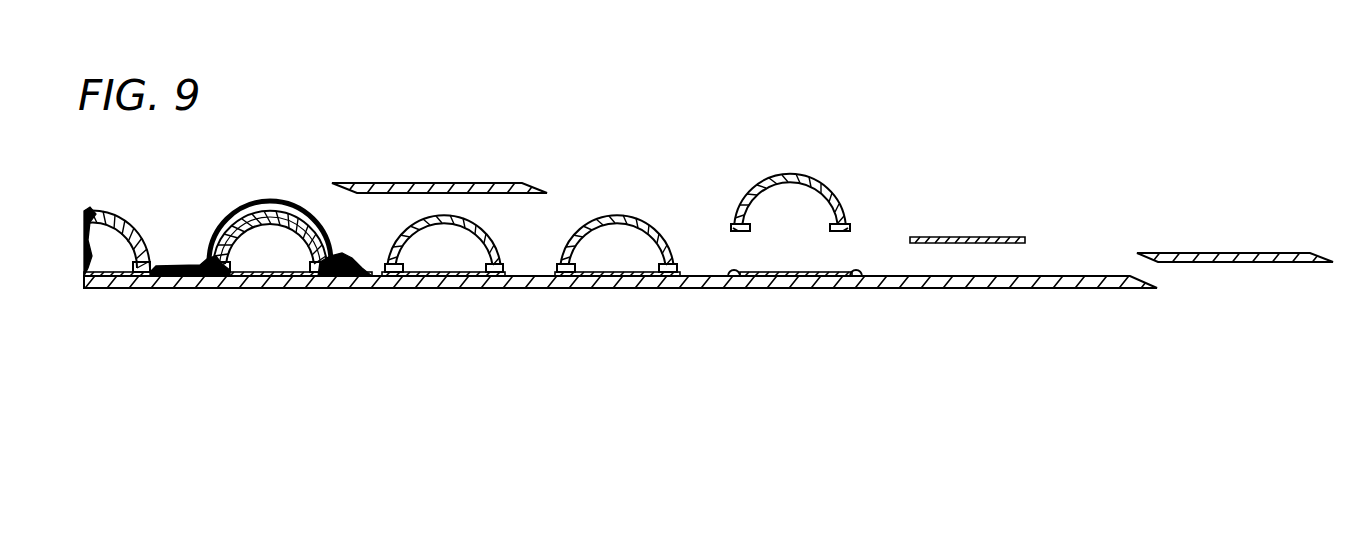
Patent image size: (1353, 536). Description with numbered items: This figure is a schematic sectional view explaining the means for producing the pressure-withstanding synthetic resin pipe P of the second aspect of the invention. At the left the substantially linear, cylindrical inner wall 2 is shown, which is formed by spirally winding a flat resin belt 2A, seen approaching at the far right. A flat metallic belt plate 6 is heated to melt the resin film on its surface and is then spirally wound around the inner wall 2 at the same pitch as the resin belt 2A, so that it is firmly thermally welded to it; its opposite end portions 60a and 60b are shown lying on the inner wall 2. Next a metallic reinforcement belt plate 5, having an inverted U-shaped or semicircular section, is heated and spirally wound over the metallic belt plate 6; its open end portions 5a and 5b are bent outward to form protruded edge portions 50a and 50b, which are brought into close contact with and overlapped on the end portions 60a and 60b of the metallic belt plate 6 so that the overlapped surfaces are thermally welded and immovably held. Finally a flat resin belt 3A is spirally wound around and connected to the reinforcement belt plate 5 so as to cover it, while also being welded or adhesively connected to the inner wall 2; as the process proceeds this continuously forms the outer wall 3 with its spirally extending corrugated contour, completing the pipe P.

The inner wall 2 is at (252, 290).
The flat resin belt 2A is at (1282, 252).
The outer wall 3 is at (272, 212).
The resin belt 3A is at (486, 183).
The metallic reinforcement belt plate 5 is at (618, 217).
The open end portion 5a is at (736, 223).
The open end portion 5b is at (843, 223).
The protruded edge portion 50a is at (736, 226).
The protruded edge portion 50b is at (848, 225).
The flat metallic belt plate 6 is at (588, 290).
The end portion 60a is at (736, 276).
The end portion 60b is at (861, 276).
The pressure-withstanding synthetic resin pipe P is at (179, 227).